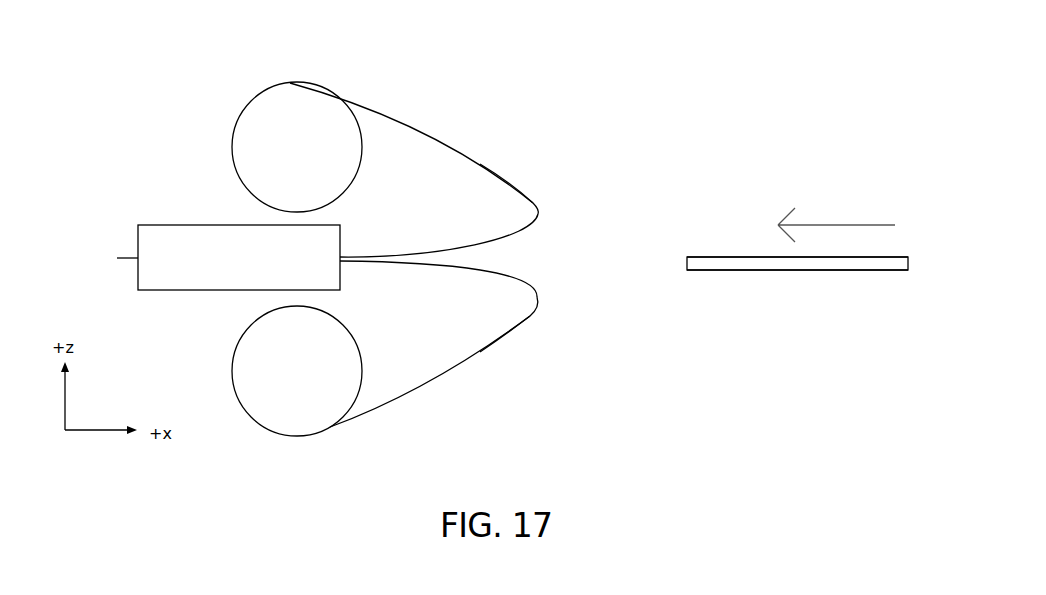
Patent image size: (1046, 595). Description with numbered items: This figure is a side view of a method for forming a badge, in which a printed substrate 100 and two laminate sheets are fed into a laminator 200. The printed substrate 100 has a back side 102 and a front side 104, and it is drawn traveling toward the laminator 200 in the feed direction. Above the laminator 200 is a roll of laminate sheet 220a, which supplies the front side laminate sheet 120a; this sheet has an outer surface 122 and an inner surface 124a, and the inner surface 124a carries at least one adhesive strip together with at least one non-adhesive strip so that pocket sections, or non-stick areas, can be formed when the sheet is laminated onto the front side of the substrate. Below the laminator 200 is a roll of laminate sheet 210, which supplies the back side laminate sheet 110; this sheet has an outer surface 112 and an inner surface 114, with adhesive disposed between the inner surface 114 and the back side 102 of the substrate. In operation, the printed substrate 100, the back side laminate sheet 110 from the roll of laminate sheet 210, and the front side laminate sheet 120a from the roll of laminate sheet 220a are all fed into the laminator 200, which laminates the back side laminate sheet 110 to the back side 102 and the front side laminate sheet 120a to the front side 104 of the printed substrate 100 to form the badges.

The laminator 200 is at (175, 220).
The roll of laminate sheet 220a is at (278, 110).
The roll of laminate sheet 210 is at (287, 408).
The front side laminate sheet 120a is at (425, 138).
The outer surface 122 is at (522, 192).
The inner surface 124a is at (535, 222).
The back side laminate sheet 110 is at (401, 405).
The outer surface 112 is at (513, 333).
The inner surface 114 is at (538, 297).
The printed substrate 100 is at (911, 256).
The back side 102 is at (862, 270).
The front side 104 is at (730, 257).